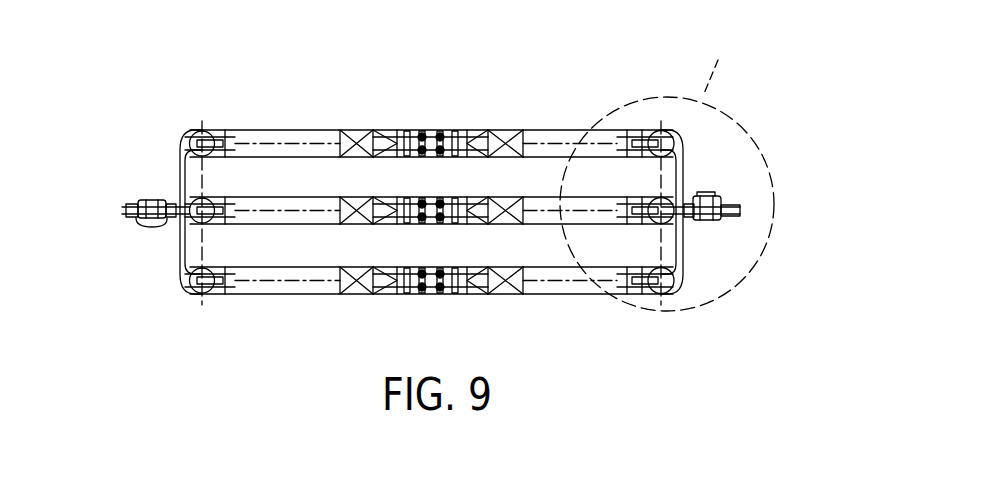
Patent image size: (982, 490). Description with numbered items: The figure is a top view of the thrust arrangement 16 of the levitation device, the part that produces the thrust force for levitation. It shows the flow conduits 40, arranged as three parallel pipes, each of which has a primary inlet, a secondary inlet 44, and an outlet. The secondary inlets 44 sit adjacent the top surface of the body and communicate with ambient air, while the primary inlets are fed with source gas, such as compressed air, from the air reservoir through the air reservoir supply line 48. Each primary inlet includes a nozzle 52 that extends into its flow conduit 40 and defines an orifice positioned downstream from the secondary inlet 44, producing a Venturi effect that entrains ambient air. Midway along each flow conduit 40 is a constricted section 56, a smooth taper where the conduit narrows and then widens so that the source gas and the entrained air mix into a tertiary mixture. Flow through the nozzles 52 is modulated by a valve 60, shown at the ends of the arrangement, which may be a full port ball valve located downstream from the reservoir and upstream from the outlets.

The thrust arrangement 16 is at (354, 76).
The flow conduit 40 is at (252, 130).
The secondary inlet 44 is at (190, 139).
The air reservoir supply line 48 is at (178, 162).
The nozzle 52 is at (202, 124).
The constricted section 56 is at (440, 130).
The valve 60 is at (148, 203).